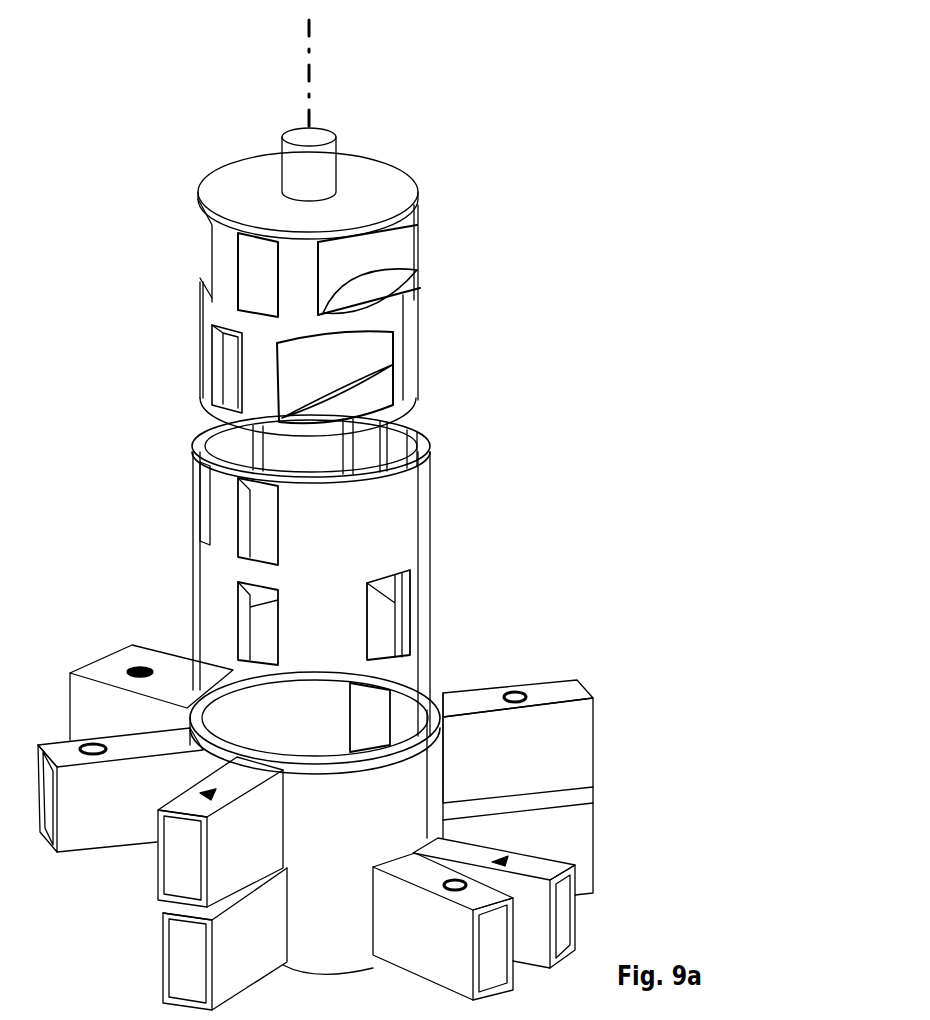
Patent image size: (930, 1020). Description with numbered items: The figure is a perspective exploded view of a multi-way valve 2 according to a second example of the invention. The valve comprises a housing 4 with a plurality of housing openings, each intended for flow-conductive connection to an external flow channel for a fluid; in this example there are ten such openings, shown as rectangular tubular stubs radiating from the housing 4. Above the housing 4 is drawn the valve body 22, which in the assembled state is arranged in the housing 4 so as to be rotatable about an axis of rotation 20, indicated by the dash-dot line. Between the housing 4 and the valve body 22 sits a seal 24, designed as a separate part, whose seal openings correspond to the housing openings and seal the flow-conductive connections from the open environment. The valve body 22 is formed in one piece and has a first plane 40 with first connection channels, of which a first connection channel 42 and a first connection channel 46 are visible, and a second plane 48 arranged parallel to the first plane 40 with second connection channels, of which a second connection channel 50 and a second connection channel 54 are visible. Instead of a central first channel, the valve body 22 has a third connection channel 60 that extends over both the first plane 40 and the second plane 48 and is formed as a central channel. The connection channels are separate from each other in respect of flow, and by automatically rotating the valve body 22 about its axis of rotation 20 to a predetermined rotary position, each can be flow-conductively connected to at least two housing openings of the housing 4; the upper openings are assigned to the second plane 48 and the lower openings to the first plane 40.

The multi-way valve 2 is at (568, 50).
The axis of rotation 20 is at (309, 73).
The valve body 22 is at (396, 182).
The seal 24 is at (425, 468).
The housing 4 is at (420, 690).
The first plane 40 is at (361, 301).
The first connection channel 42 is at (367, 387).
The first connection channel 46 is at (237, 369).
The second plane 48 is at (361, 283).
The second connection channel 50 is at (390, 250).
The second connection channel 54 is at (207, 252).
The third connection channel 60 is at (262, 272).